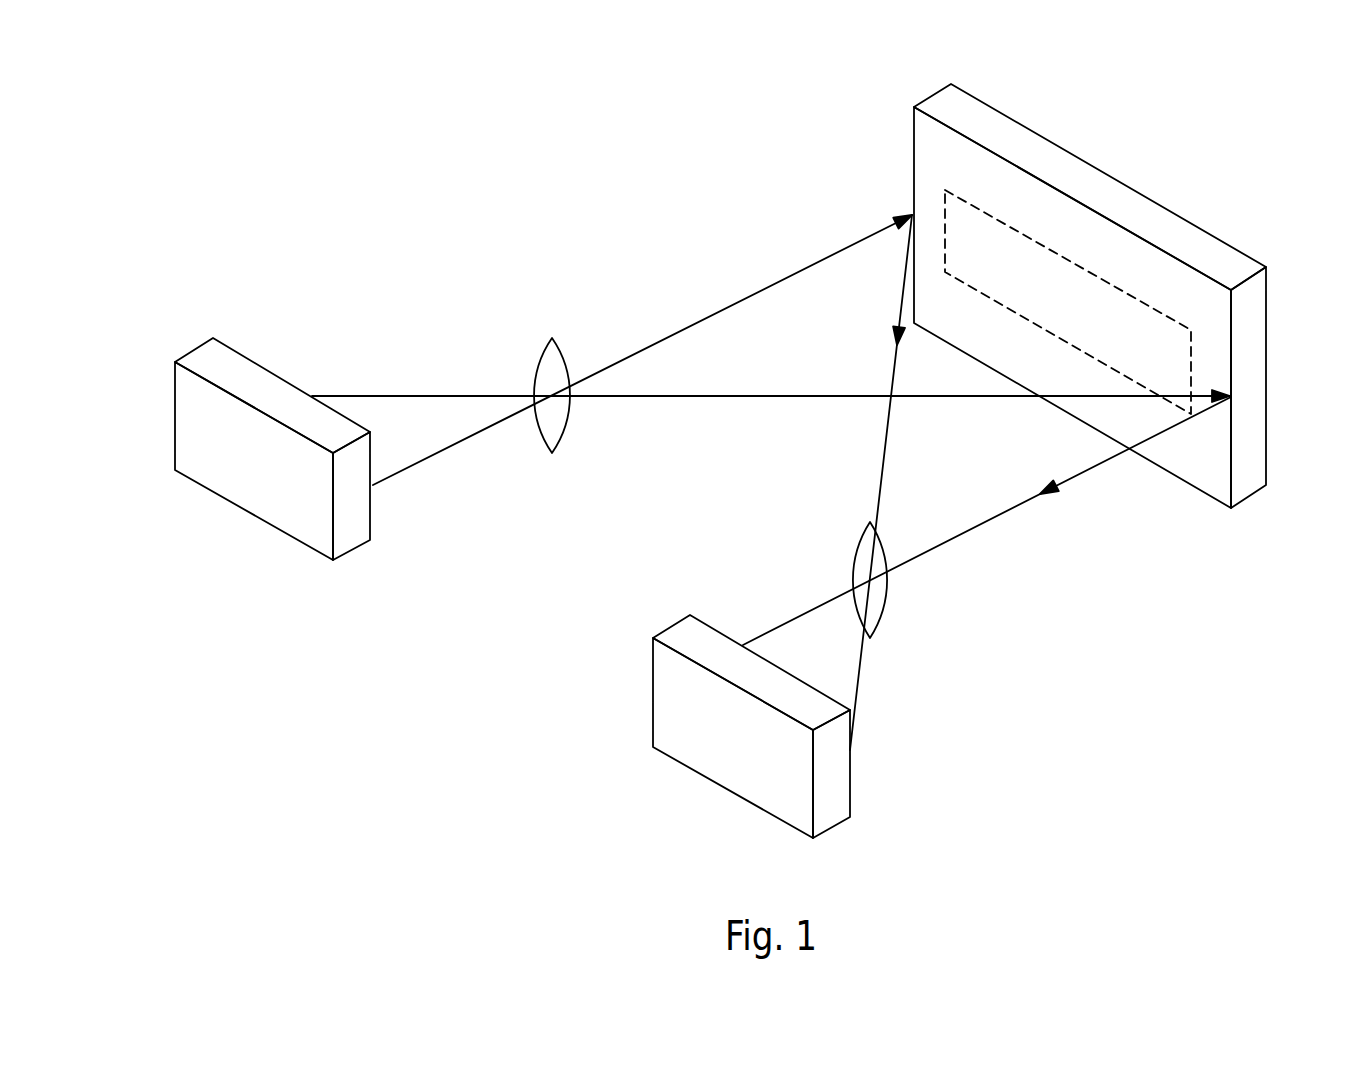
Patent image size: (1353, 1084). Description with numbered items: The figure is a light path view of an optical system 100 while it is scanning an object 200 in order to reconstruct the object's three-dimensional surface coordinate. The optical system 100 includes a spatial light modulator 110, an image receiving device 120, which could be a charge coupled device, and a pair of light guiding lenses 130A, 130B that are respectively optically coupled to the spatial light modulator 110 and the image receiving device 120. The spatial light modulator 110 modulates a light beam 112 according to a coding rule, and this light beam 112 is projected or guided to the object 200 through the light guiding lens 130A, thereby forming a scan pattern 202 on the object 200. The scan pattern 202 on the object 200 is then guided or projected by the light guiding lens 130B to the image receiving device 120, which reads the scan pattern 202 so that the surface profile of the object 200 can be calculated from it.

The optical system 100 is at (133, 69).
The spatial light modulator 110 is at (242, 375).
The light beam 112 is at (805, 267).
The image receiving device 120 is at (720, 650).
The light guiding lens 130A is at (539, 365).
The light guiding lens 130B is at (888, 603).
The object 200 is at (1113, 194).
The scan pattern 202 is at (1165, 311).